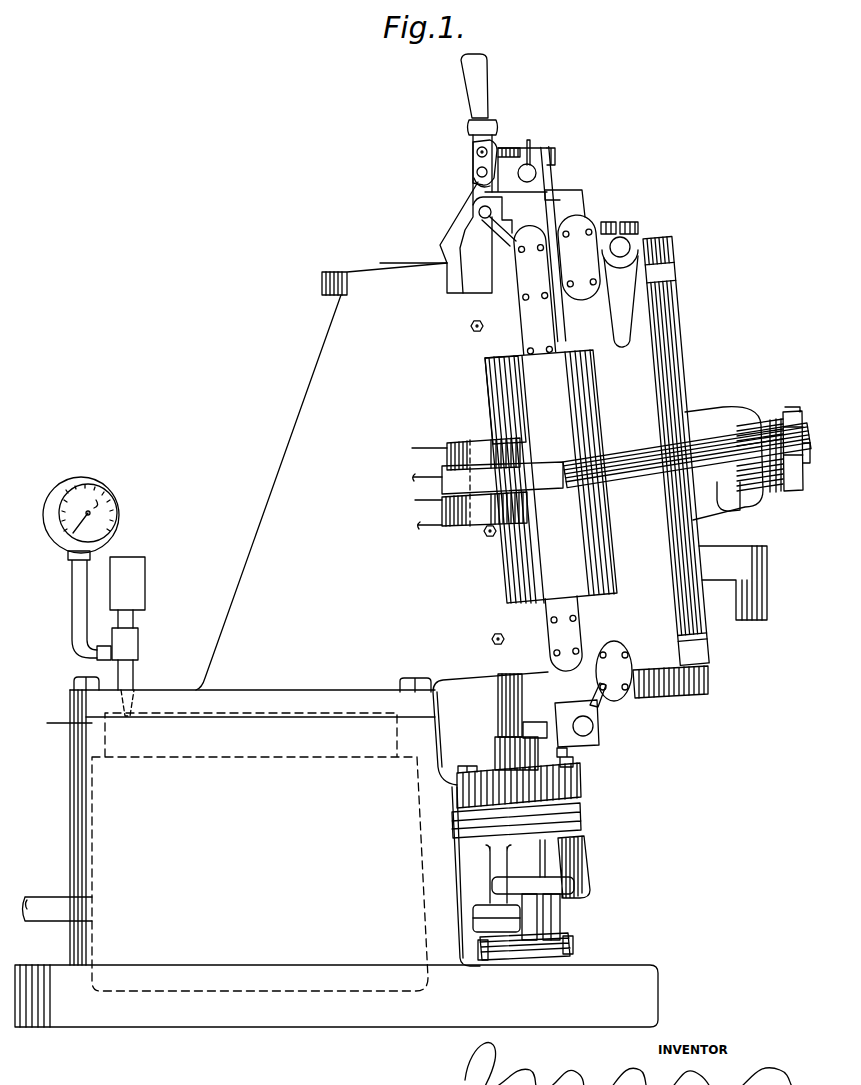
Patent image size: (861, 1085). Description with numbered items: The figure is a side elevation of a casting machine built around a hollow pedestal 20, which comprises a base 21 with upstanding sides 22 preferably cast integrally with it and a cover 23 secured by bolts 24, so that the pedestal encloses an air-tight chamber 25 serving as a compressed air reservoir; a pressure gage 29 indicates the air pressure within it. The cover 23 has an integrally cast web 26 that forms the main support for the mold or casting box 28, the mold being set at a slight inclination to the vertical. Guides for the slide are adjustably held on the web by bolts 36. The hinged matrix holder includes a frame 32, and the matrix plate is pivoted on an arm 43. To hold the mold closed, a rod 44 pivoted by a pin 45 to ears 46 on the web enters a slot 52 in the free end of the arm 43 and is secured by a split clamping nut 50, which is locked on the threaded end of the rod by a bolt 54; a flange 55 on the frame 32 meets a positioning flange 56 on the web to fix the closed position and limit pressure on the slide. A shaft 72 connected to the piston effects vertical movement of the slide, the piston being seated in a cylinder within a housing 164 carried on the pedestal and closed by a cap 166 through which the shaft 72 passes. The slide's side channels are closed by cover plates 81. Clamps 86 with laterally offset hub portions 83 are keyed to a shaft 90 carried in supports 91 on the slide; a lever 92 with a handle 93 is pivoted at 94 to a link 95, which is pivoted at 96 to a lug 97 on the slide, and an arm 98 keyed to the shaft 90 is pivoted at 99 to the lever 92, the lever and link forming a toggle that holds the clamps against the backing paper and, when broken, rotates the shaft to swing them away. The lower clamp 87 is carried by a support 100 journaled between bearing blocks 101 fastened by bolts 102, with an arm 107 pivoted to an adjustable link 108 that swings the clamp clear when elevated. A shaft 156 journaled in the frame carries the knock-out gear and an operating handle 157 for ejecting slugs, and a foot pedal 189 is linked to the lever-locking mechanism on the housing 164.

The hollow pedestal 20 is at (68, 788).
The base 21 is at (245, 1012).
The upstanding sides 22 is at (430, 775).
The cover 23 is at (318, 698).
The bolts 24 is at (76, 680).
The air-tight chamber 25 is at (93, 873).
The web 26 is at (321, 476).
The mold or casting box 28 is at (568, 189).
The pressure gage 29 is at (117, 519).
The frame 32 is at (665, 627).
The bolts 36 is at (483, 326).
The arm 43 is at (712, 410).
The rod 44 is at (642, 482).
The pin 45 is at (497, 485).
The ears 46 is at (460, 444).
The split clamping nut 50 is at (778, 490).
The slot 52 is at (720, 508).
The bolt 54 is at (796, 408).
The flange 55 is at (592, 428).
The positioning flange 56 is at (488, 388).
The shaft 72 is at (500, 698).
The cover plates 81 is at (548, 448).
The hub portions 83 is at (556, 167).
The clamps 86 is at (563, 311).
The lower clamp 87 is at (600, 707).
The shaft 90 is at (531, 165).
The supports 91 is at (527, 145).
The lever 92 is at (490, 135).
The handle 93 is at (486, 88).
The pivot 94 is at (477, 172).
The link 95 is at (476, 183).
The pivot 96 is at (483, 219).
The lug 97 is at (505, 236).
The arm 98 is at (493, 152).
The pivot 99 is at (477, 149).
The support 100 is at (598, 732).
The bearing blocks 101 is at (585, 738).
The bolts 102 is at (557, 753).
The arm 107 is at (534, 724).
The adjustable link 108 is at (440, 240).
The shaft 156 is at (630, 246).
The operating handle 157 is at (630, 318).
The housing 164 is at (584, 846).
The cap 166 is at (582, 777).
The foot pedal 189 is at (566, 886).